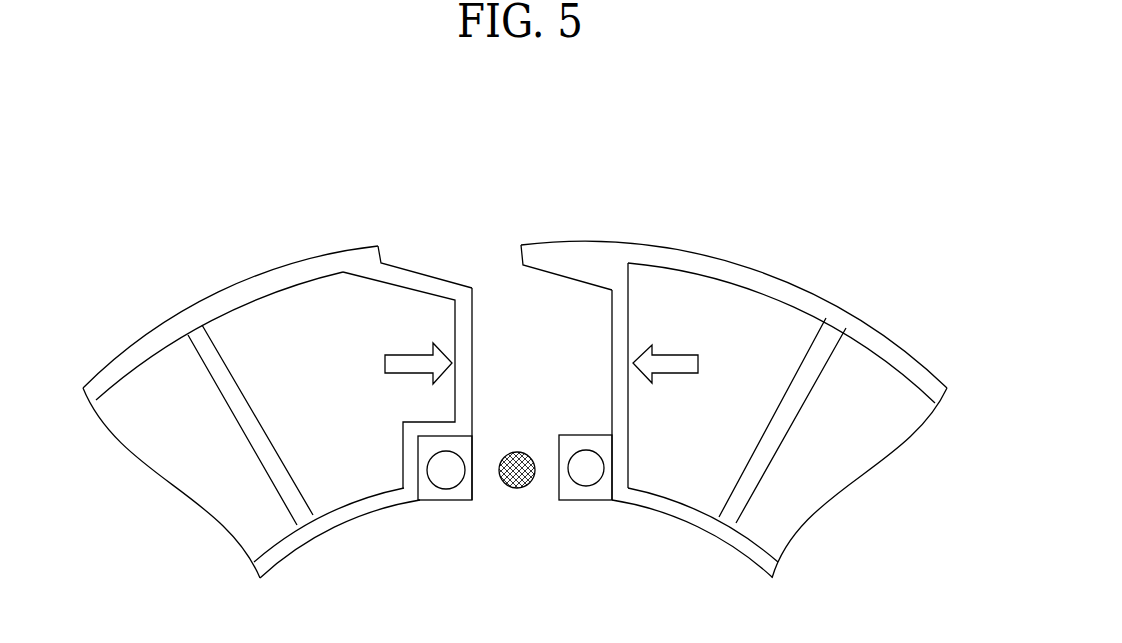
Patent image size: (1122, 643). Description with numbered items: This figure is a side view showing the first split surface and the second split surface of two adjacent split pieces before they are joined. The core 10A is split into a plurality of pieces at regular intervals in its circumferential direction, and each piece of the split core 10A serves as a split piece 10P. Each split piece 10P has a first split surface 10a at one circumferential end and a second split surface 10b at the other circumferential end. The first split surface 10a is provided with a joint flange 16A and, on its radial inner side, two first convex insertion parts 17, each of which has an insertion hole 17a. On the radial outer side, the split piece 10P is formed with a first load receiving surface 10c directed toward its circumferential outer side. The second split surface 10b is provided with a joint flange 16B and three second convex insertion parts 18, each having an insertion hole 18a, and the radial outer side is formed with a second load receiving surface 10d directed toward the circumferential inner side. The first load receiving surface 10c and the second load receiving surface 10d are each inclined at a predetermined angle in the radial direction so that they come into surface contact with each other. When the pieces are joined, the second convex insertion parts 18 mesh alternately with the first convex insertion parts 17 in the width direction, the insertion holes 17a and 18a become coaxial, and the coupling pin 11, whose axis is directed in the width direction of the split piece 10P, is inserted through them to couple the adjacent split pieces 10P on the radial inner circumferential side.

The core 10A is at (682, 236).
The split piece 10P is at (258, 273).
The first split surface 10a is at (473, 342).
The second split surface 10b is at (609, 347).
The first load receiving surface 10c is at (427, 272).
The second load receiving surface 10d is at (562, 283).
The coupling pin 11 is at (517, 488).
The joint flange 16A is at (465, 338).
The joint flange 16B is at (618, 337).
The first convex insertion part 17 is at (436, 493).
The insertion hole 17a is at (452, 478).
The second convex insertion part 18 is at (576, 495).
The insertion hole 18a is at (588, 475).